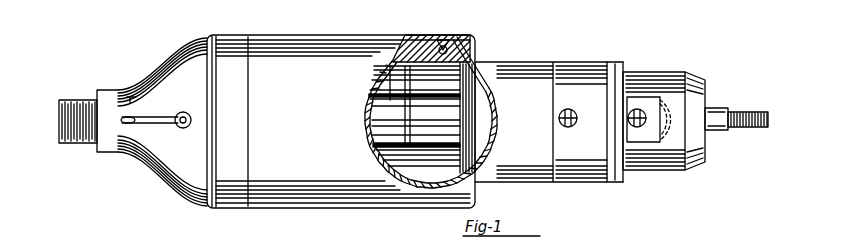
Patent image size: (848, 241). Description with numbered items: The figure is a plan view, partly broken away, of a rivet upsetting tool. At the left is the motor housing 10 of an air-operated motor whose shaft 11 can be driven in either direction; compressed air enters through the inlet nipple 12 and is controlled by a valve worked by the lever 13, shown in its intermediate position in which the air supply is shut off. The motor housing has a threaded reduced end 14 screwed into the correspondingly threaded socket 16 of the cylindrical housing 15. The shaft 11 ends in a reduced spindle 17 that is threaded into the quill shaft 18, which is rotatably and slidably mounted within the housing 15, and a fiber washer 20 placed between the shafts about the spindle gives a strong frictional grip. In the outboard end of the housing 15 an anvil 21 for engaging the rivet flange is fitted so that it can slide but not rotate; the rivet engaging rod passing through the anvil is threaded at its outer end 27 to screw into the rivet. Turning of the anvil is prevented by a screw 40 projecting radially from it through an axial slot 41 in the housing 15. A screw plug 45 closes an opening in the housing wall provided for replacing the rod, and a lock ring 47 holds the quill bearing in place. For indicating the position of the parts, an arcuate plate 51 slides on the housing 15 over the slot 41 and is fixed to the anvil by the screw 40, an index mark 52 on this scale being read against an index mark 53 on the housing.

The motor housing 10 is at (302, 34).
The shaft 11 is at (393, 35).
The inlet nipple 12 is at (73, 102).
The lever 13 is at (123, 115).
The threaded reduced end 14 is at (438, 36).
The cylindrical housing 15 is at (527, 61).
The threaded socket 16 is at (468, 34).
The reduced spindle 17 is at (425, 208).
The quill shaft 18 is at (447, 66).
The washer 20 is at (410, 34).
The anvil 21 is at (722, 107).
The threaded end of rod 27 is at (752, 126).
The screw 40 is at (628, 105).
The axial slot 41 is at (699, 73).
The screw plug 45 is at (572, 107).
The lock ring 47 is at (487, 61).
The arcuate plate 51 is at (673, 88).
The index mark 52 is at (652, 94).
The index mark 53 is at (641, 96).